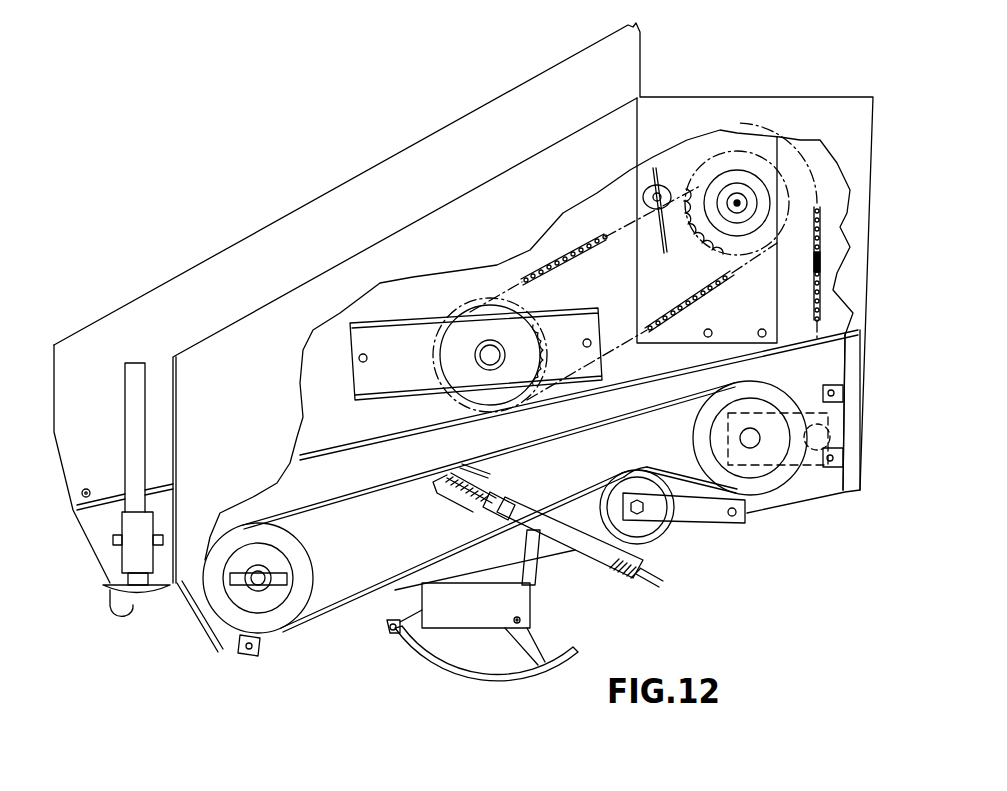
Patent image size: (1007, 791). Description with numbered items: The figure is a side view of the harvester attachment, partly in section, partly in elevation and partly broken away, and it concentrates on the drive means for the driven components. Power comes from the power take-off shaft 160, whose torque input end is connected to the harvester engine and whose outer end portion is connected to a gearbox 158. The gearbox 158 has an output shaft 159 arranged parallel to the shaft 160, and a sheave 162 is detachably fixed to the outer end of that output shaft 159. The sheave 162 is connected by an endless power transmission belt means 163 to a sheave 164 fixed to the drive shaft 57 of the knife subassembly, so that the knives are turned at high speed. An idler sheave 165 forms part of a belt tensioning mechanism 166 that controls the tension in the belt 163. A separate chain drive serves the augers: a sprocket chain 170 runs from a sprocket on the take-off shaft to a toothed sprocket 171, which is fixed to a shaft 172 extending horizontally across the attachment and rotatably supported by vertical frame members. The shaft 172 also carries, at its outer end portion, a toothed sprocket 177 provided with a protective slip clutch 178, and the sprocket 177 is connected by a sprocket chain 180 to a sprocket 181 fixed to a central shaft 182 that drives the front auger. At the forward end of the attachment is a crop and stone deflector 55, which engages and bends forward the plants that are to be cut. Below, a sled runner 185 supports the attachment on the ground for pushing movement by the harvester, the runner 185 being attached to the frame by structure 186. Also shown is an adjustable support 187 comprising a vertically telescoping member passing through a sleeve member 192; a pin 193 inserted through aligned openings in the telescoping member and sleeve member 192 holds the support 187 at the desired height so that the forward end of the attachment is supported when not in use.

The crop and stone deflector 55 is at (110, 617).
The drive shaft 57 is at (258, 578).
The gearbox 158 is at (810, 467).
The output shaft 159 is at (740, 438).
The power take-off shaft 160 is at (860, 428).
The sheave 162 is at (777, 480).
The endless power transmission belt means 163 is at (393, 582).
The sheave 164 is at (277, 623).
The idler sheave 165 is at (700, 535).
The belt tensioning mechanism 166 is at (660, 560).
The sprocket chain 170 is at (820, 285).
The toothed sprocket 171 is at (817, 262).
The shaft 172 is at (742, 197).
The toothed sprocket 177 is at (717, 240).
The slip clutch 178 is at (718, 183).
The sprocket chain 180 is at (560, 252).
The sprocket 181 is at (468, 385).
The central shaft 182 is at (483, 350).
The sled runners 185 is at (482, 678).
The structure 186 is at (531, 603).
The adjustable support 187 is at (125, 387).
The sleeve member 192 is at (130, 557).
The pin 193 is at (113, 539).